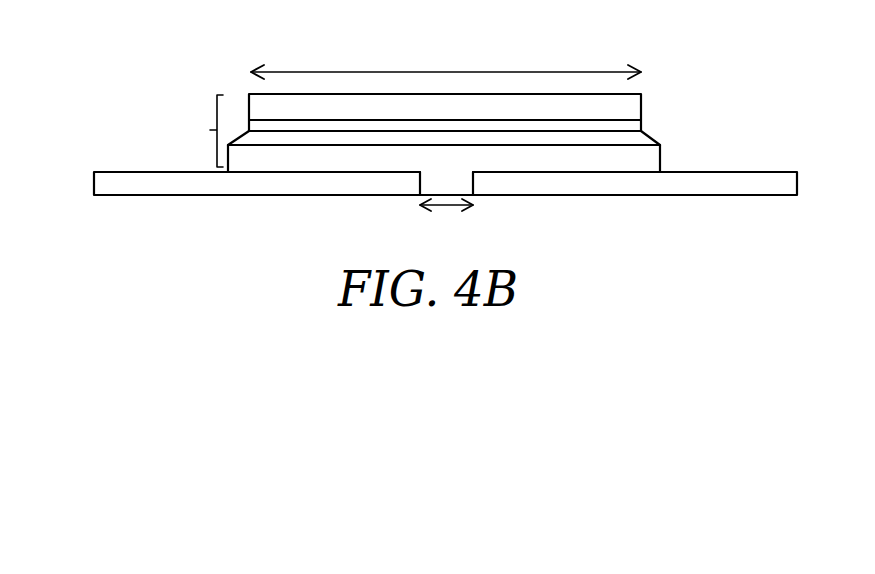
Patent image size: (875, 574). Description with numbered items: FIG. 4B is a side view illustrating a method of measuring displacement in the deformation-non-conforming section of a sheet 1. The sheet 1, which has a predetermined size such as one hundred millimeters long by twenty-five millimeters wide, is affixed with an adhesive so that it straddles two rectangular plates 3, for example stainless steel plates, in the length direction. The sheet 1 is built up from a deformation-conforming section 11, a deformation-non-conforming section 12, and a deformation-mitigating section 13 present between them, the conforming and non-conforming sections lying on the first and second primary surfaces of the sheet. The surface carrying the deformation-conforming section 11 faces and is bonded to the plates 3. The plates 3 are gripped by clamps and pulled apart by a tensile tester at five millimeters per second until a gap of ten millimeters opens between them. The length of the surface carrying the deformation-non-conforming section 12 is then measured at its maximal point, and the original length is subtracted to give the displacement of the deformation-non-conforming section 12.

The sheet 1 is at (201, 131).
The rectangular plates 3 is at (787, 184).
The deformation-conforming section 11 is at (648, 154).
The deformation-non-conforming section 12 is at (630, 101).
The deformation-mitigating section 13 is at (630, 130).